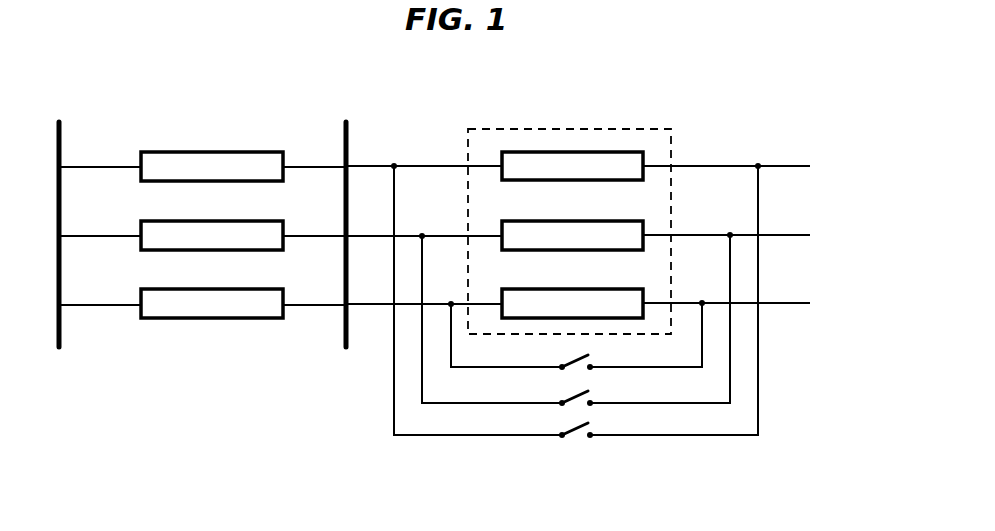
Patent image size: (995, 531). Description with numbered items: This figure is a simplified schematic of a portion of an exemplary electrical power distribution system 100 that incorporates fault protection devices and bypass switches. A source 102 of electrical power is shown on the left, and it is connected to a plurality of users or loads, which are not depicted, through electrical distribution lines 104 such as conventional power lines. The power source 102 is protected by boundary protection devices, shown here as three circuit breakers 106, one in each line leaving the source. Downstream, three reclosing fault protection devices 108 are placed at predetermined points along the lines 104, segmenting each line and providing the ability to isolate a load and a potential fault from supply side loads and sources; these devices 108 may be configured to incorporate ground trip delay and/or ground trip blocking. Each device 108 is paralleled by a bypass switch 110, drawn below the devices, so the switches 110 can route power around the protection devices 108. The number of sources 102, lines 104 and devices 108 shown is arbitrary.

The electrical power distribution system 100 is at (434, 90).
The source 102 is at (61, 138).
The electrical distribution lines 104 is at (742, 163).
The circuit breakers 106 is at (170, 289).
The reclosing fault protection devices 108 is at (520, 289).
The bypass switches 110 is at (575, 434).